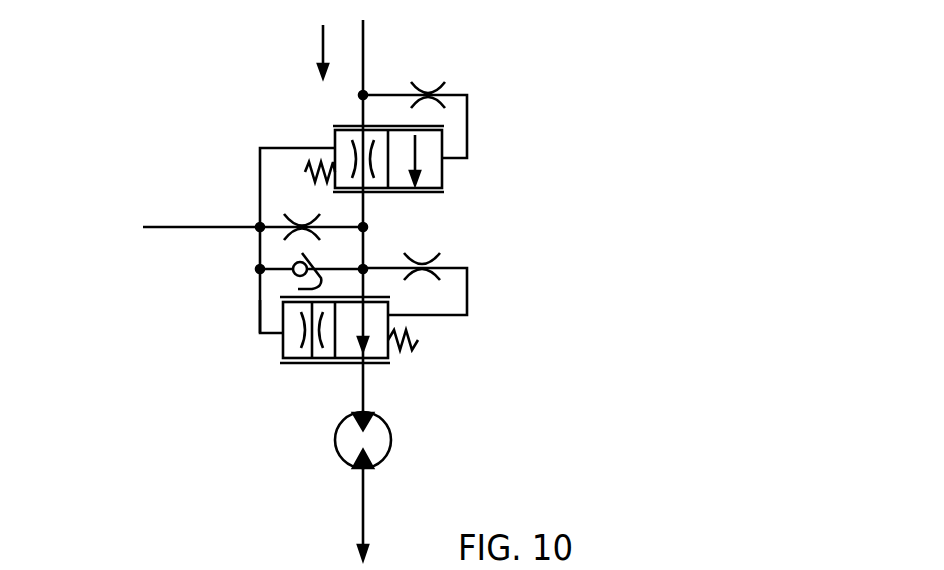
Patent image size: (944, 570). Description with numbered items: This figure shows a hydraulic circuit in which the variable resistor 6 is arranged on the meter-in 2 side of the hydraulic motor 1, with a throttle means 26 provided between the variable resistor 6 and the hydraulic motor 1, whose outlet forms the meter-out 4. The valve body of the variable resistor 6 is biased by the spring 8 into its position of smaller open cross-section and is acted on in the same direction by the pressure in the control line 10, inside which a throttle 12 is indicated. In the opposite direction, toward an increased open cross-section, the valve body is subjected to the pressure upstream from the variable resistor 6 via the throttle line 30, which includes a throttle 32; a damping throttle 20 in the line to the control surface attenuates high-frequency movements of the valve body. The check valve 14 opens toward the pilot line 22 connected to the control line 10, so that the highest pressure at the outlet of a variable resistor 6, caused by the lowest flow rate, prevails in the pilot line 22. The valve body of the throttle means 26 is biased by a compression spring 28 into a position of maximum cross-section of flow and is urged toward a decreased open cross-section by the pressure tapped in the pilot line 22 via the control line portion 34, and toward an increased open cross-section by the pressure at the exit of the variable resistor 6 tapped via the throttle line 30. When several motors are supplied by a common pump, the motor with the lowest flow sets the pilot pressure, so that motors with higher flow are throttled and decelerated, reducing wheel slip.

The hydraulic motor 1 is at (382, 440).
The meter-in 2 is at (363, 390).
The meter-out 4 is at (362, 517).
The variable resistor 6 is at (470, 174).
The spring 8 is at (305, 172).
The control line 10 is at (260, 200).
The throttle 12 is at (307, 216).
The check valve 14 is at (300, 289).
The damping throttle 20 is at (428, 88).
The pilot line 22 is at (193, 228).
The throttle means 26 is at (300, 381).
The compression spring 28 is at (418, 342).
The throttle line 30 is at (467, 116).
The throttle 32 is at (421, 252).
The control line portion 34 is at (260, 314).